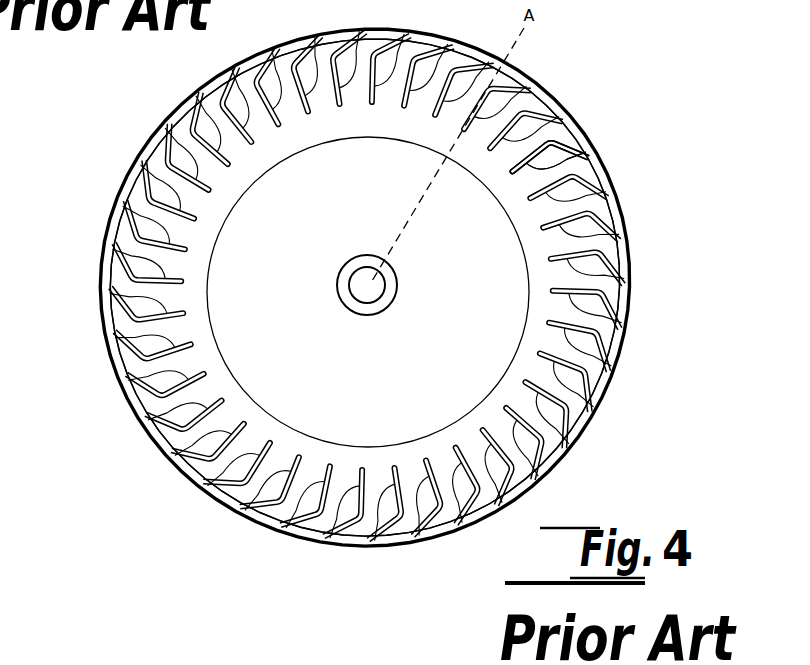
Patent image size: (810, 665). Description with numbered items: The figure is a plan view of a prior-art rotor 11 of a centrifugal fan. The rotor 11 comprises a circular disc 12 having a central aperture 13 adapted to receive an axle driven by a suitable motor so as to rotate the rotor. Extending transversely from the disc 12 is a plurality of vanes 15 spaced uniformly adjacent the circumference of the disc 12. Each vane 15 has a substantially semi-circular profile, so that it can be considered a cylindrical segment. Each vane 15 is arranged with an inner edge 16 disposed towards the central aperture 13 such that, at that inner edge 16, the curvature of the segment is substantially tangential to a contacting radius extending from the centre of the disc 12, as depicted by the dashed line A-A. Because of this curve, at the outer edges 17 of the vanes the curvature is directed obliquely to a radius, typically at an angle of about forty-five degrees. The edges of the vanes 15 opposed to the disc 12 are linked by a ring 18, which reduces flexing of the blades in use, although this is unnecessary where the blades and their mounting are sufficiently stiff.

The rotor 11 is at (560, 167).
The circular disc 12 is at (495, 307).
The central aperture 13 is at (347, 300).
The vanes 15 is at (217, 492).
The inner edge 16 is at (585, 238).
The outer edges 17 is at (560, 138).
The ring 18 is at (592, 404).